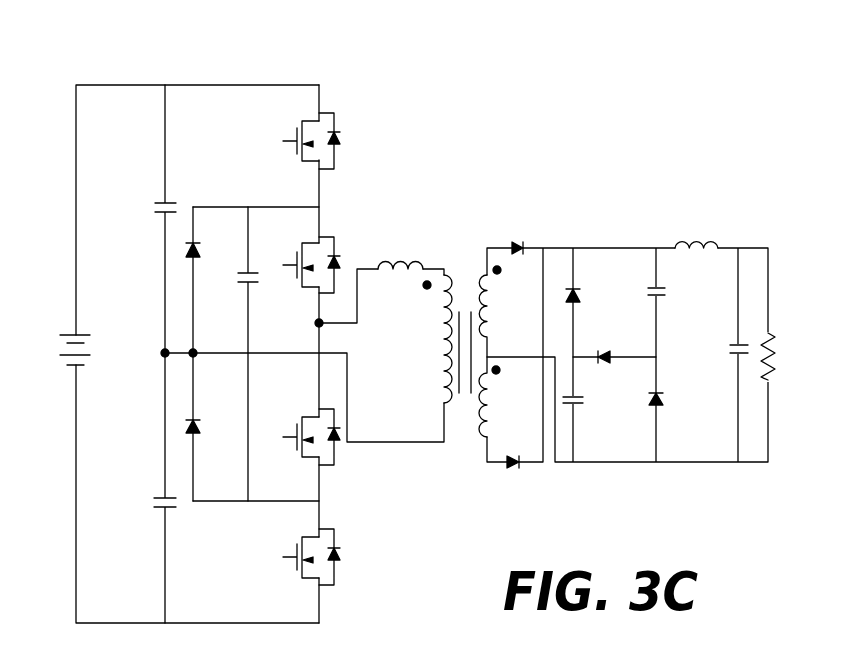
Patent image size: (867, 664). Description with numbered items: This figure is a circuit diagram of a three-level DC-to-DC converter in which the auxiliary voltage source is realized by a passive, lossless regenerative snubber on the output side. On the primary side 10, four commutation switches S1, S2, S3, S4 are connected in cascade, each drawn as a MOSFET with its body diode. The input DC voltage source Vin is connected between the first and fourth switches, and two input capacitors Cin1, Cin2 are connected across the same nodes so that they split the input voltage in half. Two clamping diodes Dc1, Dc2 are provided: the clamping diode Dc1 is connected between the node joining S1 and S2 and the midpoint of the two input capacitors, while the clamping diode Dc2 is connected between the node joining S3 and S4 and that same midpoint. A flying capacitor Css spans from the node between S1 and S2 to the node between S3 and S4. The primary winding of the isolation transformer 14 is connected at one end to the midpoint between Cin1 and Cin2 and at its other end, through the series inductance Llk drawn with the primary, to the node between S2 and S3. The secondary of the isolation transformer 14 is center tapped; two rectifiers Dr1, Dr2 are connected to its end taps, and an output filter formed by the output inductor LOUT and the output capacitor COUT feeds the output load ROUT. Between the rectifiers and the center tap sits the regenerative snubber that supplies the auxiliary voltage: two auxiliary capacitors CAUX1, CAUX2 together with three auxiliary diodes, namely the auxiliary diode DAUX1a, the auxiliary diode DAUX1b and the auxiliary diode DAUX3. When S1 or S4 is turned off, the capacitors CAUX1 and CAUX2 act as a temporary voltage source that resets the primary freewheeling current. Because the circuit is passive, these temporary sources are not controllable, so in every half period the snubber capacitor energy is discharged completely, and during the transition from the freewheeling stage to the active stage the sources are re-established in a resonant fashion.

The primary side 10 is at (252, 312).
The isolation transformer 14 is at (655, 296).
The input DC voltage source Vin is at (61, 335).
The input capacitor Cin1 is at (147, 219).
The input capacitor Cin2 is at (147, 488).
The clamping diode Dc1 is at (209, 280).
The clamping diode Dc2 is at (209, 427).
The flying capacitor Css is at (262, 354).
The first commutation switch S1 is at (305, 140).
The second commutation switch S2 is at (305, 265).
The third commutation switch S3 is at (305, 434).
The fourth commutation switch S4 is at (305, 555).
The leakage inductance Llk is at (404, 282).
The rectifier Dr1 is at (521, 265).
The rectifier Dr2 is at (521, 443).
The auxiliary diode DAUX1a is at (604, 282).
The auxiliary diode DAUX1b is at (614, 371).
The auxiliary capacitor CAUX1 is at (603, 424).
The auxiliary capacitor CAUX2 is at (687, 312).
The auxiliary diode DAUX3 is at (688, 420).
The output inductor LOUT is at (700, 264).
The output capacitor COUT is at (713, 368).
The output load ROUT is at (795, 357).